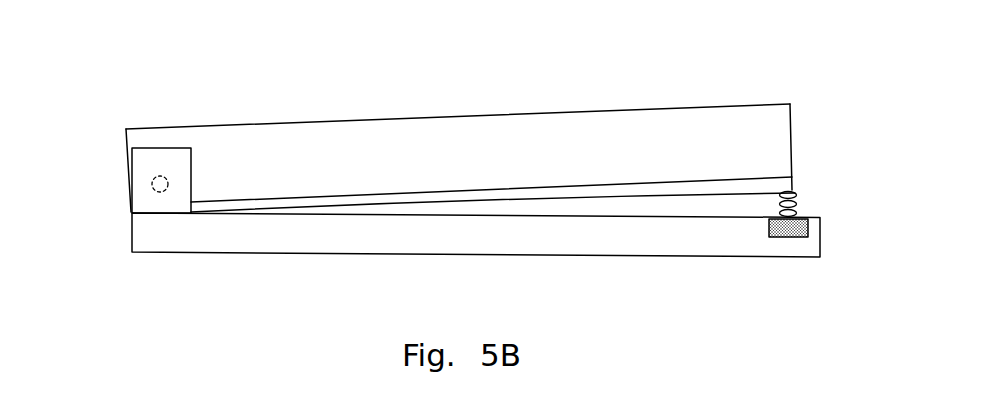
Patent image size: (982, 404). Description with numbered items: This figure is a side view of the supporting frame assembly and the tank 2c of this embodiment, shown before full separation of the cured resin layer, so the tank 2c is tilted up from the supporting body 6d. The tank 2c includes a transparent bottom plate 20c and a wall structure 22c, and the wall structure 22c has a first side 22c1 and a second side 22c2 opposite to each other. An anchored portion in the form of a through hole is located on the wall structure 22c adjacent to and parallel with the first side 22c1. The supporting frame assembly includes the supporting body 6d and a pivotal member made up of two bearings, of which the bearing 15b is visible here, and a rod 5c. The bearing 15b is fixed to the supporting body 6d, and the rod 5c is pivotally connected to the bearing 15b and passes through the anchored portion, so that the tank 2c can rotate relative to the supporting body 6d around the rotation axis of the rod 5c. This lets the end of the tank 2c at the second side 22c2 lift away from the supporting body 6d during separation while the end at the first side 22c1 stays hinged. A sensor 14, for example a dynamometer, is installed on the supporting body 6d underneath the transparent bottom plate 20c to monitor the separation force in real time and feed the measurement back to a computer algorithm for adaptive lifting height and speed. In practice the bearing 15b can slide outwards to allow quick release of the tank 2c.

The tank 2c is at (690, 62).
The transparent bottom plate 20c is at (535, 193).
The wall structure 22c is at (459, 132).
The first side 22c1 is at (114, 124).
The second side 22c2 is at (804, 101).
The bearing 15b is at (140, 186).
The rod 5c is at (157, 193).
The supporting body 6d is at (662, 257).
The sensor 14 is at (788, 237).